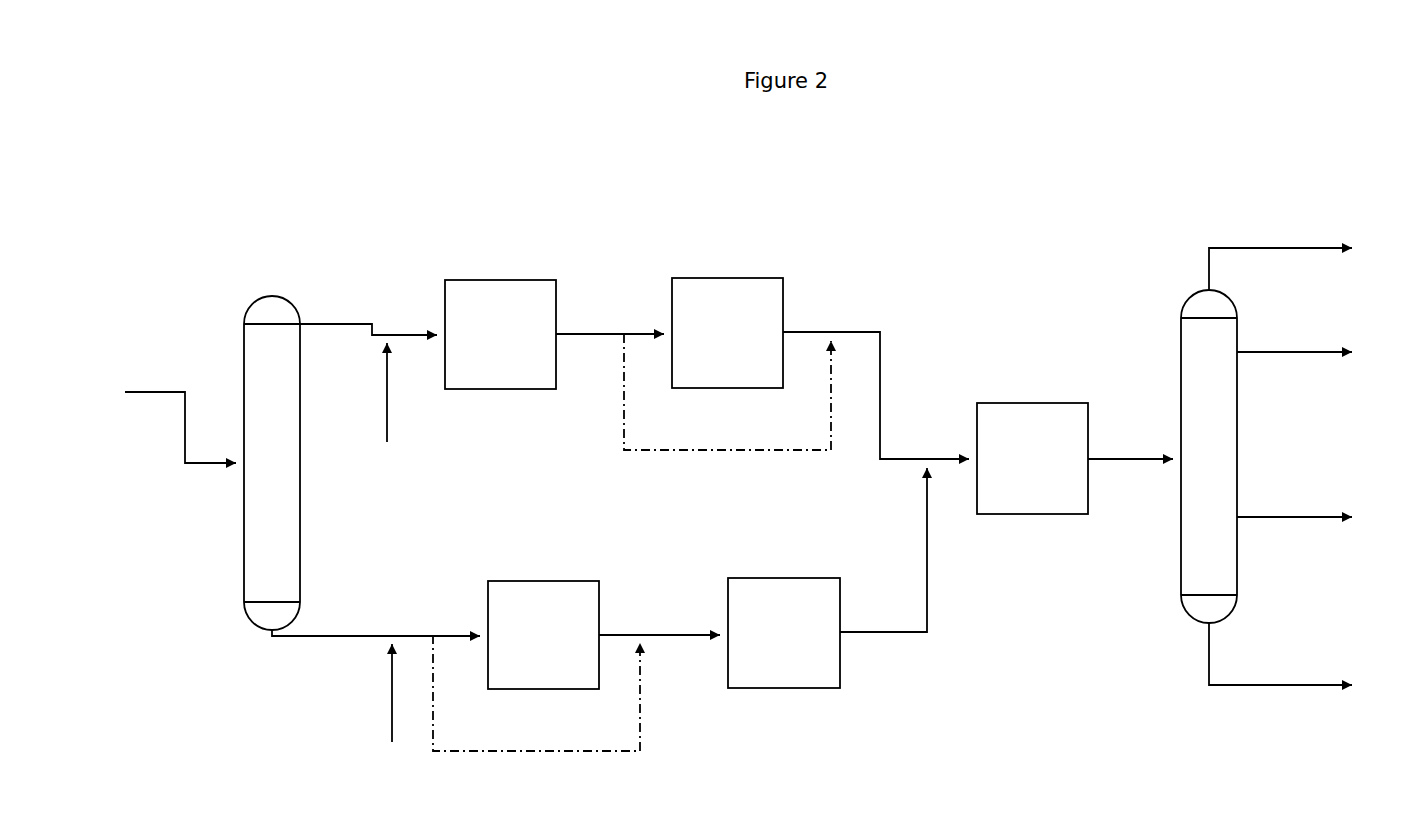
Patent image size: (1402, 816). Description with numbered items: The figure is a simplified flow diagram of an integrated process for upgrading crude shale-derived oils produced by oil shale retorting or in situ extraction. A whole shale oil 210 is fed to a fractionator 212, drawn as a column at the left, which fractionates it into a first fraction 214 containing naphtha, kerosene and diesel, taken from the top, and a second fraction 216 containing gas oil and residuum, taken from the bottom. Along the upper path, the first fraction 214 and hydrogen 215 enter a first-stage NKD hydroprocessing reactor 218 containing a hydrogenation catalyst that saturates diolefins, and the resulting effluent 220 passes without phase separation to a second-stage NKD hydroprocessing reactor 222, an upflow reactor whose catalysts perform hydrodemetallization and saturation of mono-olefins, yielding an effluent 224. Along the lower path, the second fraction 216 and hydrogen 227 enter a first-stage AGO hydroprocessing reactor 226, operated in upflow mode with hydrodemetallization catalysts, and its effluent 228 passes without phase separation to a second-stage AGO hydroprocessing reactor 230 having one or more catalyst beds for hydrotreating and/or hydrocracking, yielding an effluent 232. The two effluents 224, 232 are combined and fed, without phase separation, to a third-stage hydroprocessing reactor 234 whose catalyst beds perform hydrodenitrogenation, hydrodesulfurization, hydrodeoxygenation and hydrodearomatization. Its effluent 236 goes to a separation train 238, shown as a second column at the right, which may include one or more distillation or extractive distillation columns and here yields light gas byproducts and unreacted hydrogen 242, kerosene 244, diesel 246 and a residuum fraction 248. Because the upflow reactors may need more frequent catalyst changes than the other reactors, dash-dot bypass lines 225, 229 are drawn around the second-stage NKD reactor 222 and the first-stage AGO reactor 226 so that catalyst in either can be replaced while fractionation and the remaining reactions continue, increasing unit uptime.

The whole shale oil 210 is at (155, 392).
The fractionator 212 is at (267, 296).
The first fraction 214 is at (348, 324).
The hydrogen 215 is at (384, 424).
The second fraction 216 is at (375, 632).
The first-stage NKD hydroprocessing reactor 218 is at (500, 334).
The effluent 220 is at (618, 334).
The second-stage NKD hydroprocessing reactor 222 is at (727, 333).
The effluent 224 is at (833, 334).
The bypass line 225 is at (728, 447).
The first-stage AGO hydroprocessing reactor 226 is at (543, 635).
The hydrogen 227 is at (388, 724).
The effluent 228 is at (648, 632).
The bypass line 229 is at (538, 750).
The second-stage AGO hydroprocessing reactor 230 is at (784, 633).
The effluent 232 is at (876, 632).
The third-stage hydroprocessing reactor 234 is at (1032, 458).
The effluent 236 is at (1131, 456).
The separation train 238 is at (1188, 295).
The light gas byproducts and unreacted hydrogen 242 is at (1278, 248).
The kerosene 244 is at (1301, 352).
The diesel 246 is at (1303, 517).
The residuum fraction 248 is at (1311, 682).